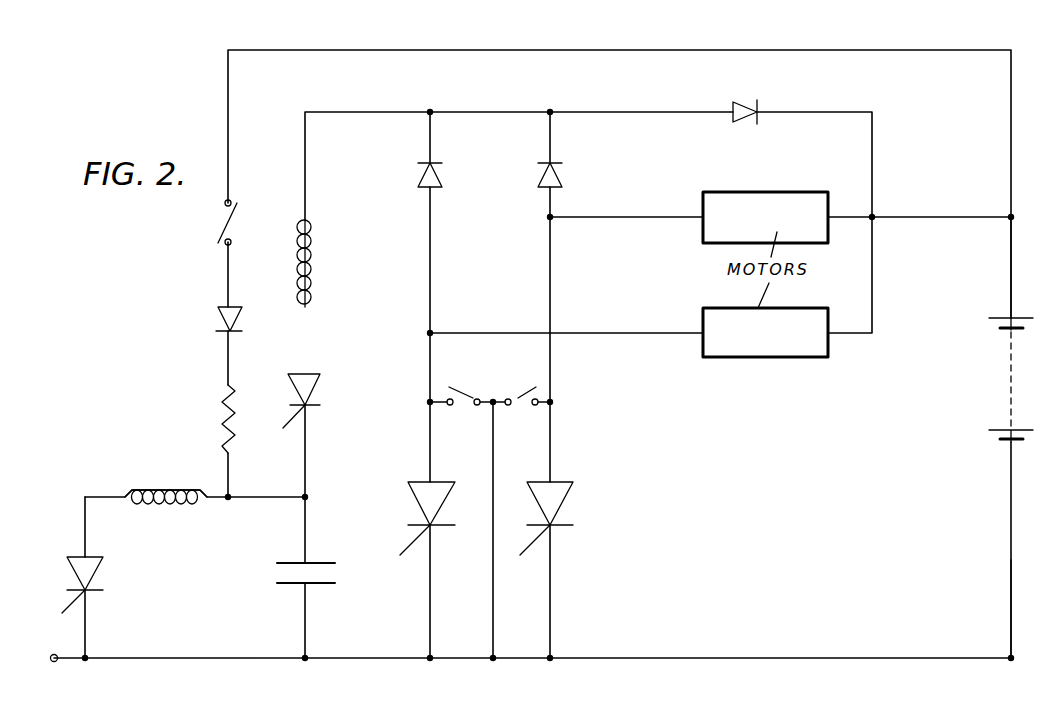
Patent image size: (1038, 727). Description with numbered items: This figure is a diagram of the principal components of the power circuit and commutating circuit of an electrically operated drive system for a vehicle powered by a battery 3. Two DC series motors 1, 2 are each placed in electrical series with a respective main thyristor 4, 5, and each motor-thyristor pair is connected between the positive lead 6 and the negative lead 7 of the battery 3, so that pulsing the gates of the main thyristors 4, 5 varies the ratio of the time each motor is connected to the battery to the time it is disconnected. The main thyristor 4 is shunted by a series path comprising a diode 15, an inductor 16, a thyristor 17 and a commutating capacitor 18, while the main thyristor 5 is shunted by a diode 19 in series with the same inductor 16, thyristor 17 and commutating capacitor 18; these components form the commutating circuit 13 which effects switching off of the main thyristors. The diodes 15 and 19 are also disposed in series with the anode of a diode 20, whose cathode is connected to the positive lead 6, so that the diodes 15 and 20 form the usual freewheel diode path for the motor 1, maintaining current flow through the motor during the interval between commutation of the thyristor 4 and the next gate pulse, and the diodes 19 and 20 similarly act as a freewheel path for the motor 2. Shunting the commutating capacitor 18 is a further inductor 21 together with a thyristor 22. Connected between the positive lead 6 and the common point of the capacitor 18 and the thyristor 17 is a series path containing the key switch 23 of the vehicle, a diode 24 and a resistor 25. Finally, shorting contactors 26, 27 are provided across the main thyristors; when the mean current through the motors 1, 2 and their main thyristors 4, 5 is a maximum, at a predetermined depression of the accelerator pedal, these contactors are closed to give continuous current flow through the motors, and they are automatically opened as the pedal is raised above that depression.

The DC series motor 1 is at (758, 234).
The DC series motor 2 is at (758, 350).
The battery 3 is at (1008, 362).
The main thyristor 4 is at (565, 498).
The main thyristor 5 is at (410, 498).
The positive lead 6 is at (1010, 243).
The negative lead 7 is at (1010, 592).
The commutating circuit 13 is at (326, 432).
The diode 15 is at (558, 172).
The inductor 16 is at (314, 263).
The thyristor 17 is at (318, 392).
The commutating capacitor 18 is at (297, 590).
The diode 19 is at (438, 172).
The diode 20 is at (748, 120).
The inductor 21 is at (140, 488).
The thyristor 22 is at (97, 578).
The key switch 23 is at (220, 228).
The diode 24 is at (216, 313).
The resistor 25 is at (223, 401).
The shorting contactor 26 is at (460, 386).
The shorting contactor 27 is at (521, 388).